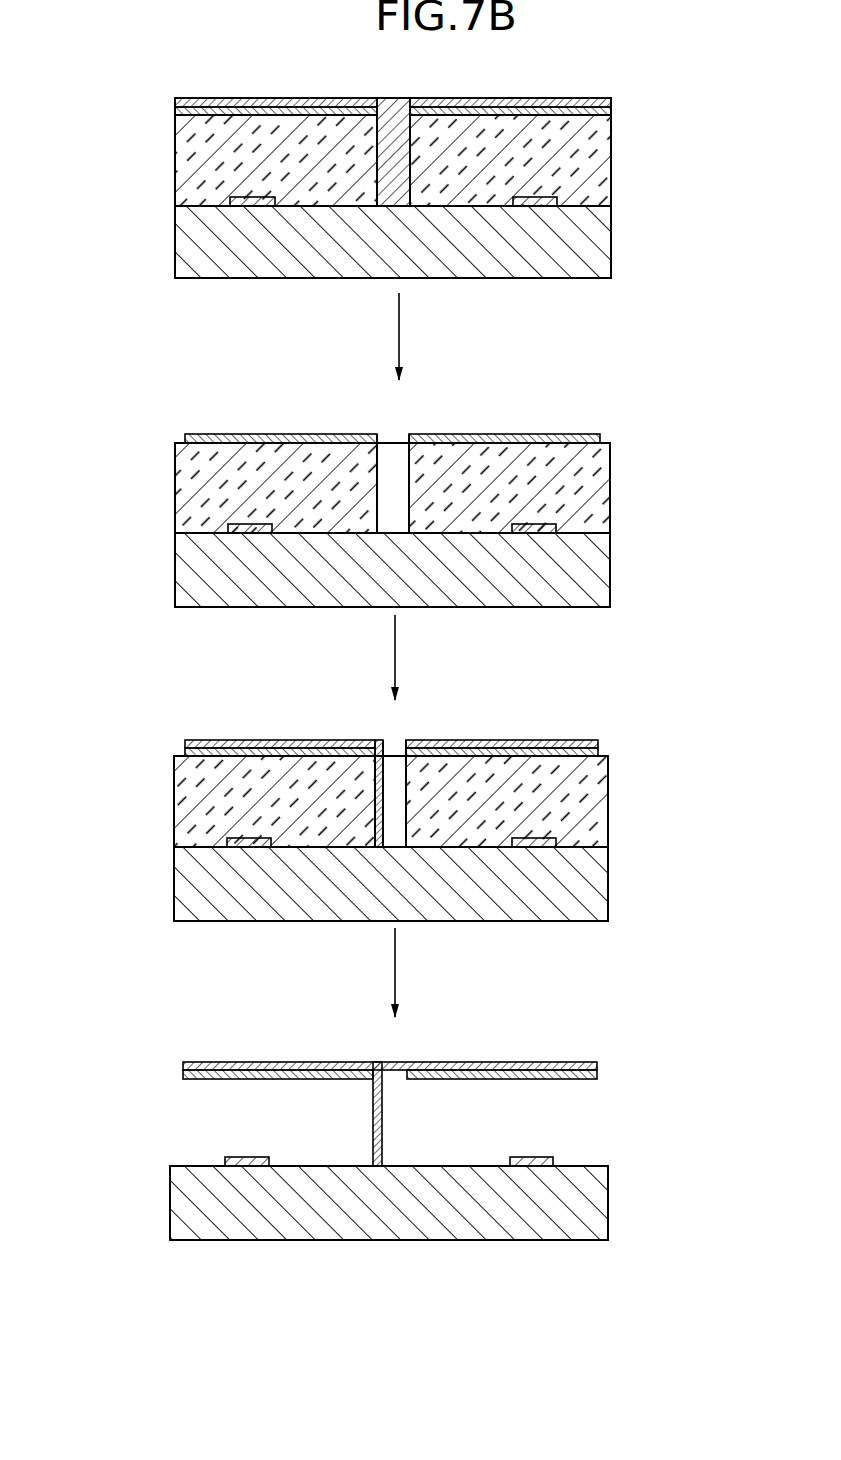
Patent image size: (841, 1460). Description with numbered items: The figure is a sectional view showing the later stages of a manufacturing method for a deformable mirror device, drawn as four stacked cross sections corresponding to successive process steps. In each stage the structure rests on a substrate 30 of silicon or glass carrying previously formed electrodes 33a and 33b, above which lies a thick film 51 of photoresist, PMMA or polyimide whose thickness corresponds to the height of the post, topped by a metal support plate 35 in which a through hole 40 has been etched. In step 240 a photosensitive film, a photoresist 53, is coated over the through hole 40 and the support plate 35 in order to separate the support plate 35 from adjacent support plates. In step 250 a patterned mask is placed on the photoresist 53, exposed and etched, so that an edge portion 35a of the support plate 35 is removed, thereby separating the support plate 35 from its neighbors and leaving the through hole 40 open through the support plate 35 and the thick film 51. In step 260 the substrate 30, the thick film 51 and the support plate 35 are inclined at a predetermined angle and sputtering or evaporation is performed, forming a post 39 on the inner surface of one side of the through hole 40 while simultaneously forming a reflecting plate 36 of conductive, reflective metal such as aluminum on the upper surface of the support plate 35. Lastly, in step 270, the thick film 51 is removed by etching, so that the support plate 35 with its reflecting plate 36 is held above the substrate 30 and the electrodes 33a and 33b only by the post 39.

The substrate 30 is at (595, 262).
The electrode 33a is at (595, 206).
The electrode 33b is at (250, 207).
The support plate 35 is at (611, 111).
The edge portion of the support plate 35a is at (600, 443).
The reflecting plate 36 is at (597, 742).
The post 39 is at (376, 796).
The through hole 40 is at (401, 434).
The thick film 51 is at (595, 160).
The photoresist 53 is at (611, 101).
The step 240 is at (155, 238).
The step 250 is at (155, 555).
The step 260 is at (150, 858).
The step 270 is at (152, 1201).